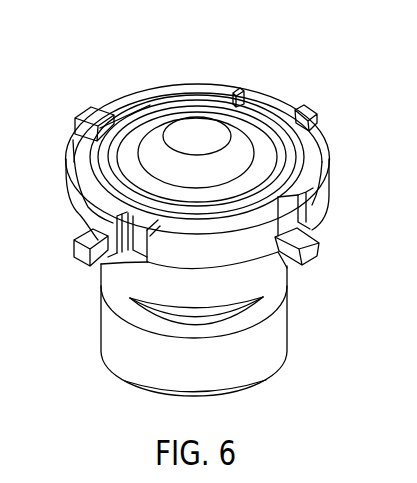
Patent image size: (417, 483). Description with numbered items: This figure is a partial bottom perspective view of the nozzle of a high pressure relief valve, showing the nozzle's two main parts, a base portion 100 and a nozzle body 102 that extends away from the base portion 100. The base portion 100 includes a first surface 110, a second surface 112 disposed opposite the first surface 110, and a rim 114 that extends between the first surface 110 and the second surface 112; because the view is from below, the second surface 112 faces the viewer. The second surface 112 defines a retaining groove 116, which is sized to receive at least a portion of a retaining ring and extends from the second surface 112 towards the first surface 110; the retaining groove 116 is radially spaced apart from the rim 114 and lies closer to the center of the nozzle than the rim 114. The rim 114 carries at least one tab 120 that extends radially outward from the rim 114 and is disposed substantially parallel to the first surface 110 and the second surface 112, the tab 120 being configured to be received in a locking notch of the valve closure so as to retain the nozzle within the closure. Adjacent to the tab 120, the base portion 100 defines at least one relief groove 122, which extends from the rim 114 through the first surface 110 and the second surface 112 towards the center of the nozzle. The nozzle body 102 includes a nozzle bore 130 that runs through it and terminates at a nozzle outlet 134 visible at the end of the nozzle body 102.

The base portion 100 is at (328, 140).
The nozzle body 102 is at (104, 357).
The first surface 110 is at (73, 220).
The second surface 112 is at (143, 93).
The rim 114 is at (68, 196).
The retaining groove 116 is at (261, 117).
The tab 120 is at (83, 257).
The relief groove 122 is at (328, 192).
The nozzle bore 130 is at (203, 153).
The nozzle outlet 134 is at (194, 140).